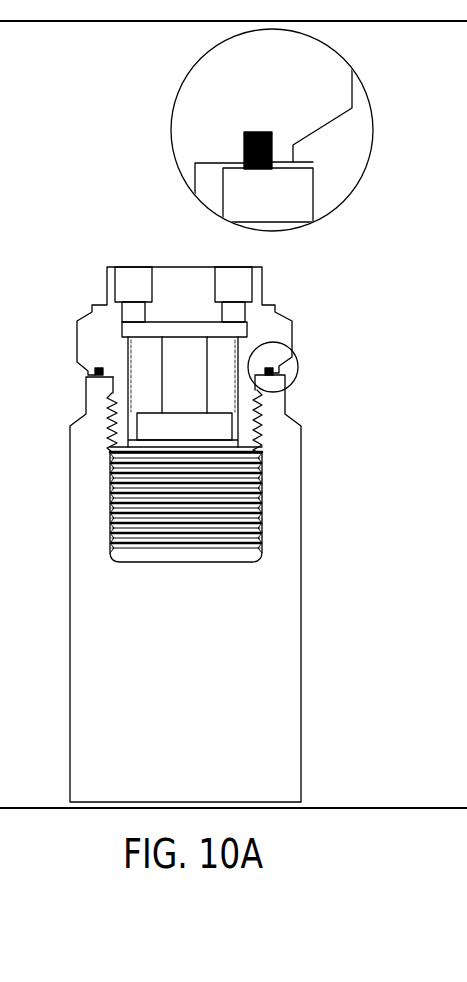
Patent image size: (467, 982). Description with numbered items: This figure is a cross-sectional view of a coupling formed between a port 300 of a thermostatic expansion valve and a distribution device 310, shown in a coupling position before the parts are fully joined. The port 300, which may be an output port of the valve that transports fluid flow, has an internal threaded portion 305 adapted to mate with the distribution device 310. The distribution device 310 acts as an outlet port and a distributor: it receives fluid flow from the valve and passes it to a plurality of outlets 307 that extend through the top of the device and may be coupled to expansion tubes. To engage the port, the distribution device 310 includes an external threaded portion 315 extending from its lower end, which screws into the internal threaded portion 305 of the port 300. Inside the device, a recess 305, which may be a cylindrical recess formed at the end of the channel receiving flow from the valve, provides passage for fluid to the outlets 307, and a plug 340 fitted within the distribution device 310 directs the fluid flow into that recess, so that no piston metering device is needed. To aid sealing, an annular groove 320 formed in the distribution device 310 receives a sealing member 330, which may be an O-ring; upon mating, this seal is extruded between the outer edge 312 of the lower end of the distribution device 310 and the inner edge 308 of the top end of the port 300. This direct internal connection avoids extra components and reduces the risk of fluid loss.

The port 300 is at (303, 473).
The internal threaded portion 305 is at (183, 328).
The outlets 307 is at (143, 268).
The inner edge 308 is at (298, 165).
The distribution device 310 is at (106, 290).
The outer edge 312 is at (300, 149).
The external threaded portion 315 is at (113, 388).
The annular groove 320 is at (258, 131).
The sealing member 330 is at (244, 141).
The plug 340 is at (130, 353).